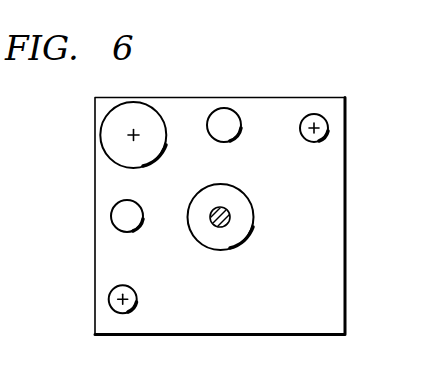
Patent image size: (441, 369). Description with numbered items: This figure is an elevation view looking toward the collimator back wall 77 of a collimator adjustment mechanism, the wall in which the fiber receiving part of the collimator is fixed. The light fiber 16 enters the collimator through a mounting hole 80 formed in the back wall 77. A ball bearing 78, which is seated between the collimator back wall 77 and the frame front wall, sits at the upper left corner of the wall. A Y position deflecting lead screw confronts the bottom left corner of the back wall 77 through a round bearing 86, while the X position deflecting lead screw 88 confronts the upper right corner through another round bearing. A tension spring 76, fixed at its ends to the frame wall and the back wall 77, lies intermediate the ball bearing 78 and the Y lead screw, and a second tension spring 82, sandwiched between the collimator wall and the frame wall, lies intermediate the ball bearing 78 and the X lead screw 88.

The collimator back wall 77 is at (281, 305).
The ball bearing 78 is at (100, 134).
The second tension spring 82 is at (224, 108).
The X position deflecting lead screw 88 is at (328, 129).
The tension spring 76 is at (111, 216).
The round bearing 86 is at (109, 299).
The mounting hole 80 is at (222, 196).
The light fiber 16 is at (230, 218).